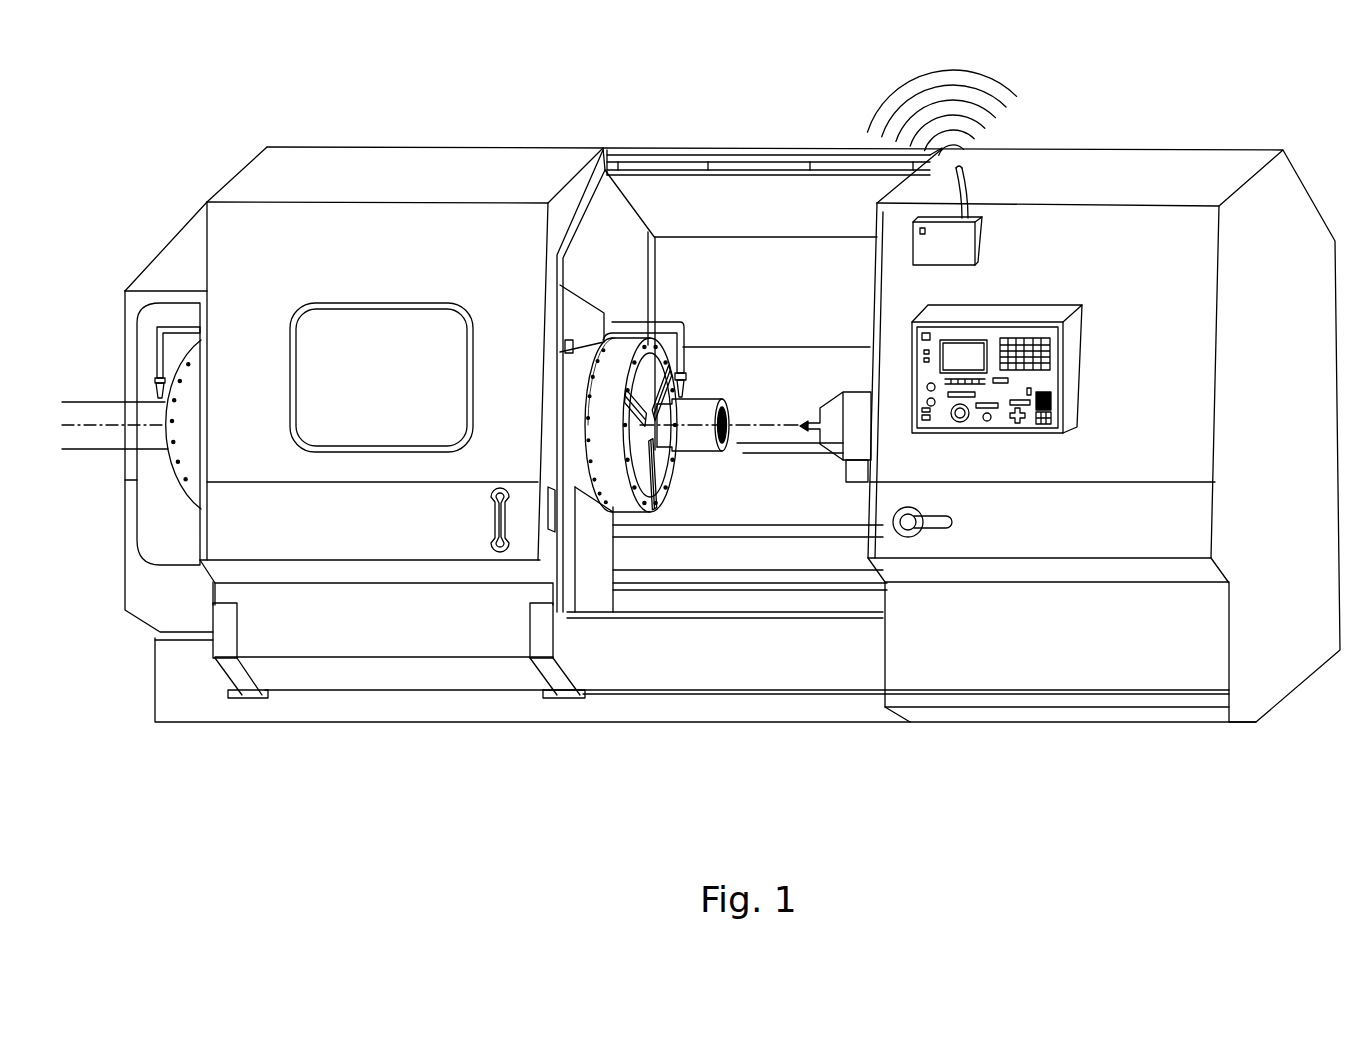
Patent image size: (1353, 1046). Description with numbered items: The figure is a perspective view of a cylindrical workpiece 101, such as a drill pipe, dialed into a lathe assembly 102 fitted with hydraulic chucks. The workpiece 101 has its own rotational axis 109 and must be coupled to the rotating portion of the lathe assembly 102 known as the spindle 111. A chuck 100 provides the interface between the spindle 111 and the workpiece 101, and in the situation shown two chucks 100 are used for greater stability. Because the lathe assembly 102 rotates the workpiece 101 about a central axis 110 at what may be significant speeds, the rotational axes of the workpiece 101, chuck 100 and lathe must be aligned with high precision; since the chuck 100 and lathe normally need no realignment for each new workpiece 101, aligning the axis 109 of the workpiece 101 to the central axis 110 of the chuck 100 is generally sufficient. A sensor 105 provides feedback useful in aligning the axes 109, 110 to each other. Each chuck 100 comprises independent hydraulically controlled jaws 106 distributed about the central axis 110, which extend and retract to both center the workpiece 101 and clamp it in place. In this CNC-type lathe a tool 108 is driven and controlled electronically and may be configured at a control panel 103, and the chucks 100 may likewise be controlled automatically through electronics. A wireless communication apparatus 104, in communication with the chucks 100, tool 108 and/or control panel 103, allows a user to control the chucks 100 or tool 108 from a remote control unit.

The chuck 100 is at (167, 499).
The workpiece 101 is at (712, 386).
The lathe assembly 102 is at (727, 112).
The control panel 103 is at (1070, 346).
The wireless communication apparatus 104 is at (957, 253).
The sensor 105 is at (162, 352).
The jaws 106 is at (660, 471).
The tool 108 is at (836, 461).
The axis 109 is at (97, 408).
The central axis 110 is at (750, 416).
The spindle 111 is at (585, 505).